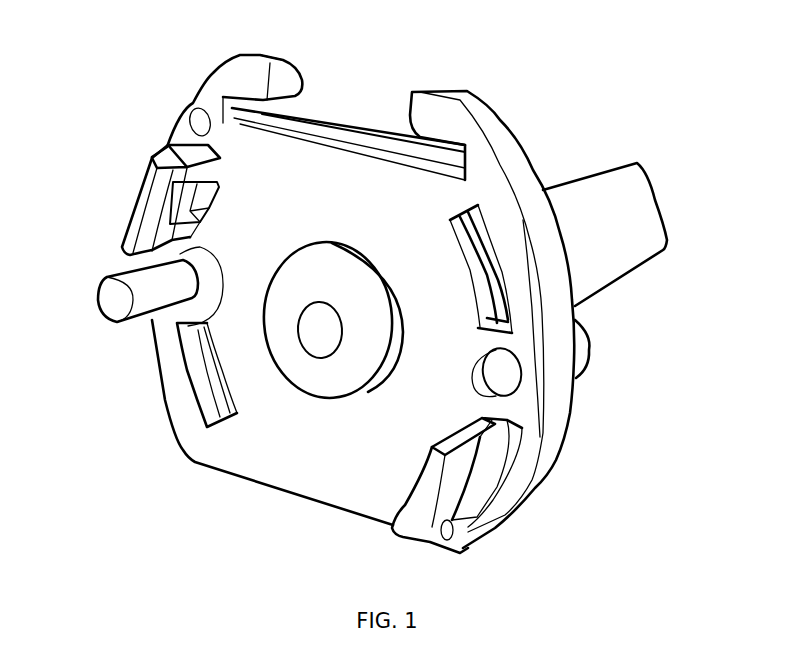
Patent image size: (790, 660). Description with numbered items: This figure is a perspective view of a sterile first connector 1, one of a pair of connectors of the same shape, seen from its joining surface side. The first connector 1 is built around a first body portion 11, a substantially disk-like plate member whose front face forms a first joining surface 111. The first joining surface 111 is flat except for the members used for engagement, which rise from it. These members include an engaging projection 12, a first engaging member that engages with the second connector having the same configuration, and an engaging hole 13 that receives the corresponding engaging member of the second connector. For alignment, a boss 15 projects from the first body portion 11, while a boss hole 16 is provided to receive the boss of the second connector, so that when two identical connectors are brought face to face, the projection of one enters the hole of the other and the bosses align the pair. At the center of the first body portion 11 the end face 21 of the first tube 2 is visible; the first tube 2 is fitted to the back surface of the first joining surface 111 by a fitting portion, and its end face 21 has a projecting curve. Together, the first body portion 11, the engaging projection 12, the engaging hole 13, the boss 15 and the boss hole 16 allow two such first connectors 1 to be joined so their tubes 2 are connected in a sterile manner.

The first connector 1 is at (516, 68).
The first tube 2 is at (607, 198).
The first body portion 11 is at (563, 345).
The first joining surface 111 is at (265, 148).
The engaging projection 12 is at (138, 202).
The engaging hole 13 is at (197, 375).
The boss 15 is at (123, 308).
The boss hole 16 is at (513, 377).
The end face 21 is at (330, 378).